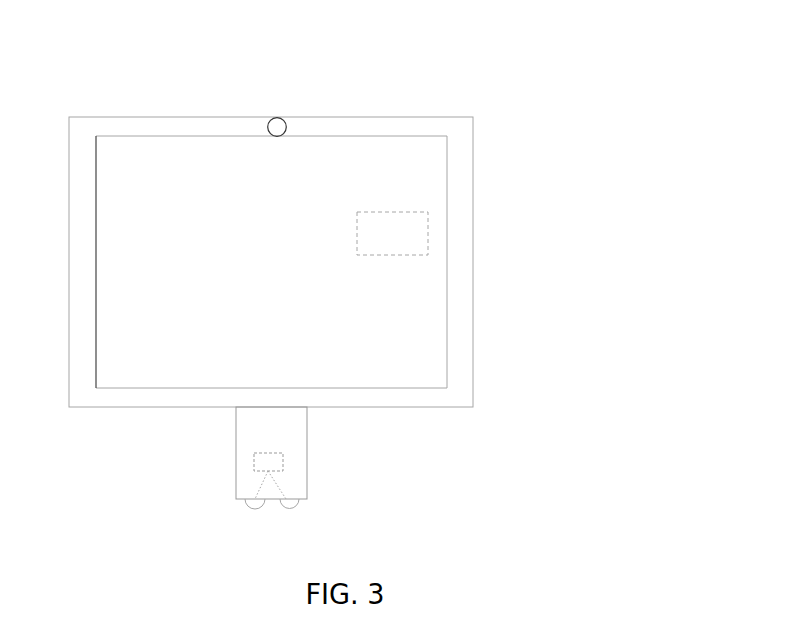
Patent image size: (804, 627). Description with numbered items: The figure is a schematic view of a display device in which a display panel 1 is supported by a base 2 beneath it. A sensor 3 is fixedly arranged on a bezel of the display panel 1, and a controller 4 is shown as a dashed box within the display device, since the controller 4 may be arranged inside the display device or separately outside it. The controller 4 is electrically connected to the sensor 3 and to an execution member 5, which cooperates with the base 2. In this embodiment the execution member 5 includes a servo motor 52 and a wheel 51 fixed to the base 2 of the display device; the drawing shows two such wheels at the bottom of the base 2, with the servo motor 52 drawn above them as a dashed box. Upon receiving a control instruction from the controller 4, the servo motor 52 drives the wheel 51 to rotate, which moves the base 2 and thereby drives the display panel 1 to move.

The display panel 1 is at (427, 360).
The base 2 is at (250, 429).
The sensor 3 is at (283, 125).
The controller 4 is at (428, 233).
The execution member 5 is at (356, 464).
The wheel 51 is at (265, 499).
The servo motor 52 is at (283, 462).